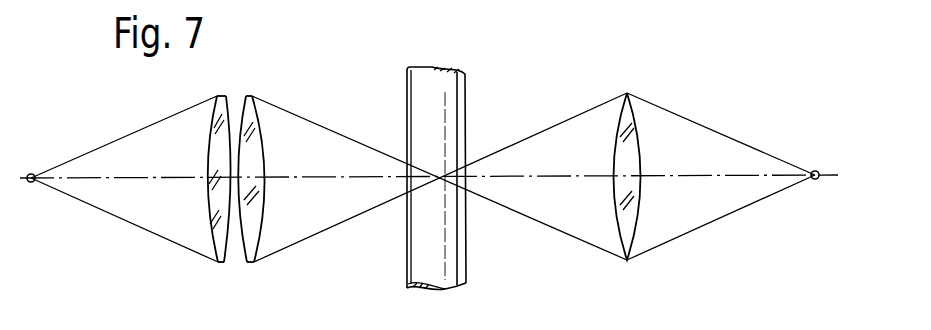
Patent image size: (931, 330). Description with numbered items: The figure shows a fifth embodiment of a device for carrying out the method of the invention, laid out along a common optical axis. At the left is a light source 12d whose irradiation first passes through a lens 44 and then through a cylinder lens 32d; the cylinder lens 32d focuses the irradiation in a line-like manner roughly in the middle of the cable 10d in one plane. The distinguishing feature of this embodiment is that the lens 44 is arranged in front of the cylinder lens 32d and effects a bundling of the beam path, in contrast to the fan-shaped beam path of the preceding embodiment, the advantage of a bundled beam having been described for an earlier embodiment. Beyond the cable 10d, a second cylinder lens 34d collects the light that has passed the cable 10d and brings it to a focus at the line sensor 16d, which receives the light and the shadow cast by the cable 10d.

The light source 12d is at (31, 183).
The cylinder lens 32d is at (253, 143).
The lens 44 is at (212, 215).
The cable 10d is at (453, 91).
The cylinder lens 34d is at (632, 140).
The line sensor 16d is at (815, 171).